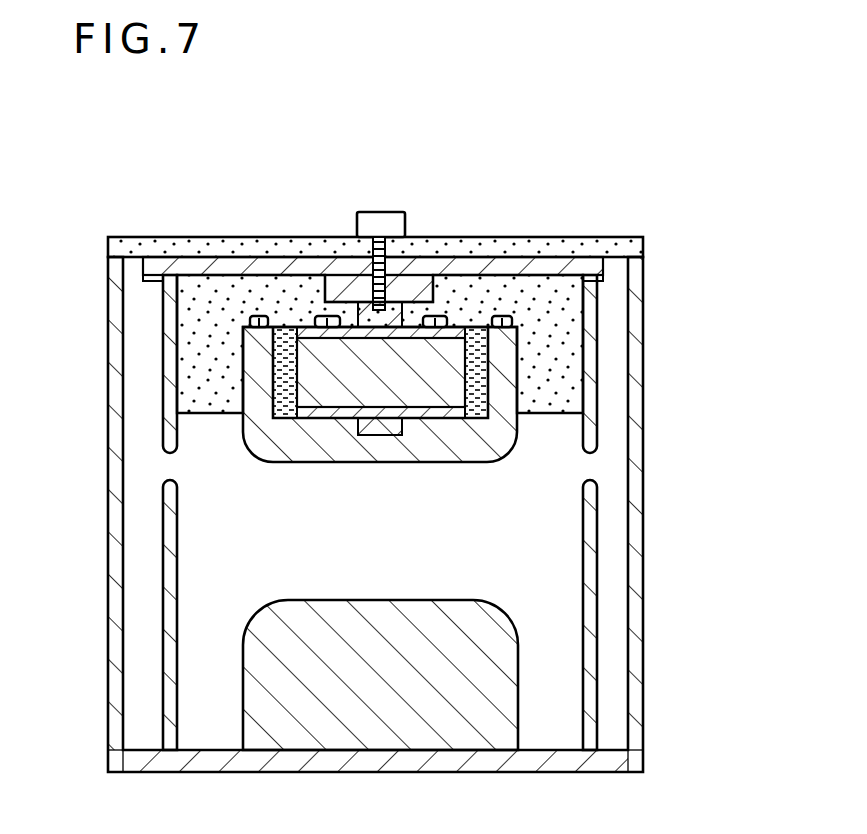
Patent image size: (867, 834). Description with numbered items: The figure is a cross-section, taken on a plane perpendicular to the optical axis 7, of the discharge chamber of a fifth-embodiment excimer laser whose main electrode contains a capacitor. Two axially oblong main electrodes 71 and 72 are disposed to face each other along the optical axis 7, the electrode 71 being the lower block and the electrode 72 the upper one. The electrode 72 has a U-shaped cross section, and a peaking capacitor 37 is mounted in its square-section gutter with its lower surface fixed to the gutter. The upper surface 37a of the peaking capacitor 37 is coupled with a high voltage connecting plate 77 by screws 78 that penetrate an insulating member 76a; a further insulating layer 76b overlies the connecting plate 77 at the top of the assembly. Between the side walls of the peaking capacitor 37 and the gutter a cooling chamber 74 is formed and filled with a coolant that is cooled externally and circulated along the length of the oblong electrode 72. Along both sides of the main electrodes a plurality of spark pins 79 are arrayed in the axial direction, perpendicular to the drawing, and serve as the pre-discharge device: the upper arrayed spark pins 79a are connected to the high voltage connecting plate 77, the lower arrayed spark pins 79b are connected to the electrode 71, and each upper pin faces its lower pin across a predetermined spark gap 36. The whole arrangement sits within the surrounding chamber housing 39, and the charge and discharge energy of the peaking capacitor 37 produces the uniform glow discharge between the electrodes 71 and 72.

The optical axis 7 is at (380, 531).
The spark gap 36 is at (588, 463).
The peaking capacitor 37 is at (470, 337).
The upper surface of peaking capacitor 37a is at (453, 330).
The outer casing 39 is at (638, 686).
The electrode 71 is at (448, 725).
The electrode 72 is at (500, 390).
The cooling chamber 74 is at (487, 363).
The insulating member 76a is at (195, 350).
The cover plate 76b is at (227, 248).
The high voltage connecting plate 77 is at (330, 275).
The screw 78 is at (380, 212).
The spark pin 79 is at (600, 545).
The upper arrayed spark pin 79a is at (172, 410).
The lower arrayed spark pin 79b is at (172, 603).